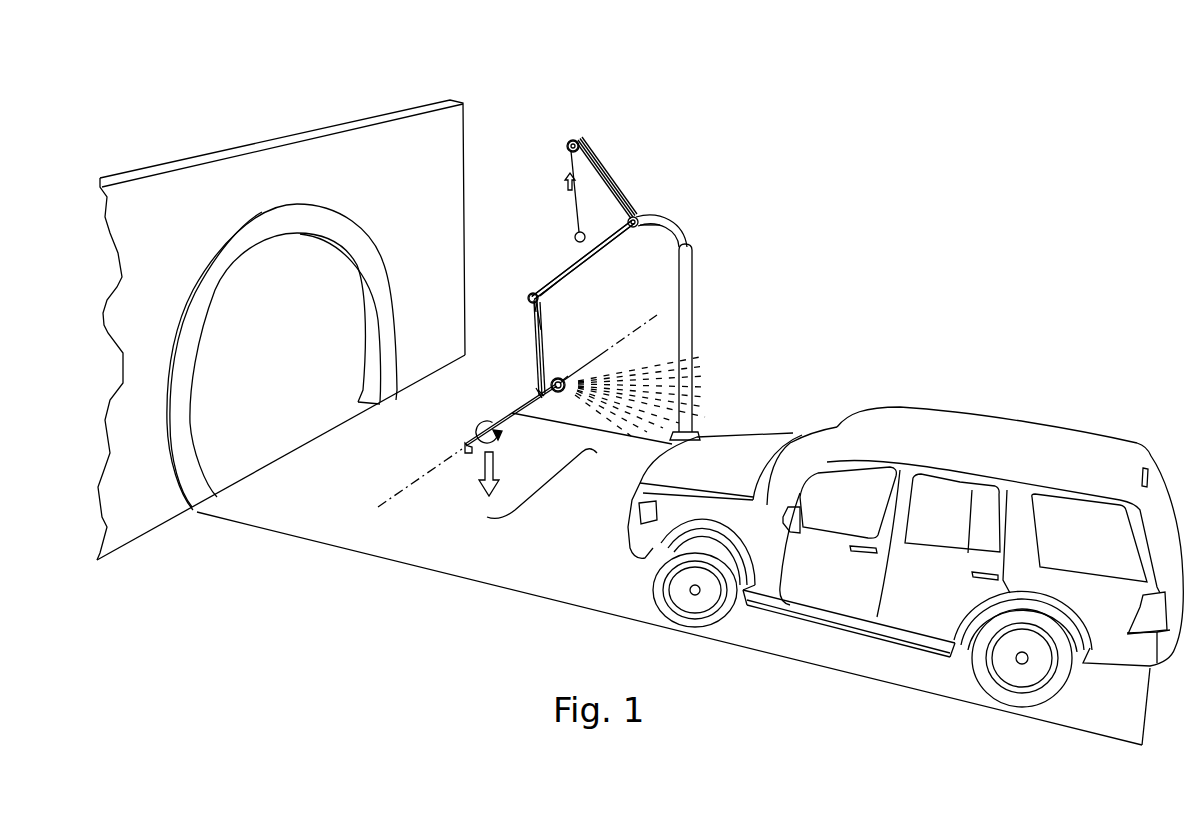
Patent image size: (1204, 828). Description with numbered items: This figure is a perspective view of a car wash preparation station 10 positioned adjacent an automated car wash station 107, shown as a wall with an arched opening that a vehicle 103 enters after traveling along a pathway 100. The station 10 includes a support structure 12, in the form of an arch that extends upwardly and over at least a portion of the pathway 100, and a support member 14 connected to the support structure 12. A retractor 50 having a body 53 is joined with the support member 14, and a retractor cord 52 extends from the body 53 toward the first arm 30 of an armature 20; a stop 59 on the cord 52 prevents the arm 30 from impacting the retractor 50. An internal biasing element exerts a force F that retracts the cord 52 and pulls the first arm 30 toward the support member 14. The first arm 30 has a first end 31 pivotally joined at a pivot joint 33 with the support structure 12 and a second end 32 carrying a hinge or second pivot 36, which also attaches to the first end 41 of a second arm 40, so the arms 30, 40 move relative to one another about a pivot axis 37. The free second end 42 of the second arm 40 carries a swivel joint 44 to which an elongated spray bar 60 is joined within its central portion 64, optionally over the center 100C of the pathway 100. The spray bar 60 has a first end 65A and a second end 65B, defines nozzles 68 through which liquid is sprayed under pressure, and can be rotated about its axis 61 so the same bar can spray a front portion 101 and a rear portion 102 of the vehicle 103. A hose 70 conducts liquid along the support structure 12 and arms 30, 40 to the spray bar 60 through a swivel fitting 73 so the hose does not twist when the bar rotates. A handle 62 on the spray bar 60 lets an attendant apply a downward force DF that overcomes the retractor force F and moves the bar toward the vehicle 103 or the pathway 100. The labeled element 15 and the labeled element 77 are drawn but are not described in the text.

The preparation station 10 is at (825, 170).
The support structure 12 is at (612, 230).
The support member 14 is at (603, 155).
The link member 15 is at (587, 140).
The armature 20 is at (492, 265).
The first arm 30 is at (550, 275).
The first end 31 is at (654, 236).
The second end 32 is at (545, 295).
The pivot joint 33 is at (636, 215).
The hinge 36 is at (527, 296).
The pivot axis 37 is at (532, 293).
The second arm 40 is at (537, 353).
The first end 41 is at (532, 305).
The second end 42 is at (536, 391).
The swivel joint 44 is at (536, 393).
The retractor 50 is at (566, 137).
The retractor cord 52 is at (567, 190).
The body 53 is at (576, 141).
The stop 59 is at (575, 235).
The spray bar 60 is at (509, 412).
The axis 61 is at (615, 343).
The handle 62 is at (463, 450).
The central portion 64 is at (575, 376).
The first end 65A is at (478, 440).
The second end 65B is at (598, 362).
The nozzles 68 is at (566, 380).
The hose 70 is at (647, 232).
The swivel fitting 73 is at (552, 397).
The nozzle pivot axis 77 is at (562, 372).
The pathway 100 is at (546, 558).
The center 100C is at (553, 489).
The front portion 101 is at (753, 432).
The rear portion 102 is at (1155, 470).
The vehicle 103 is at (961, 408).
The automated car wash station 107 is at (392, 115).